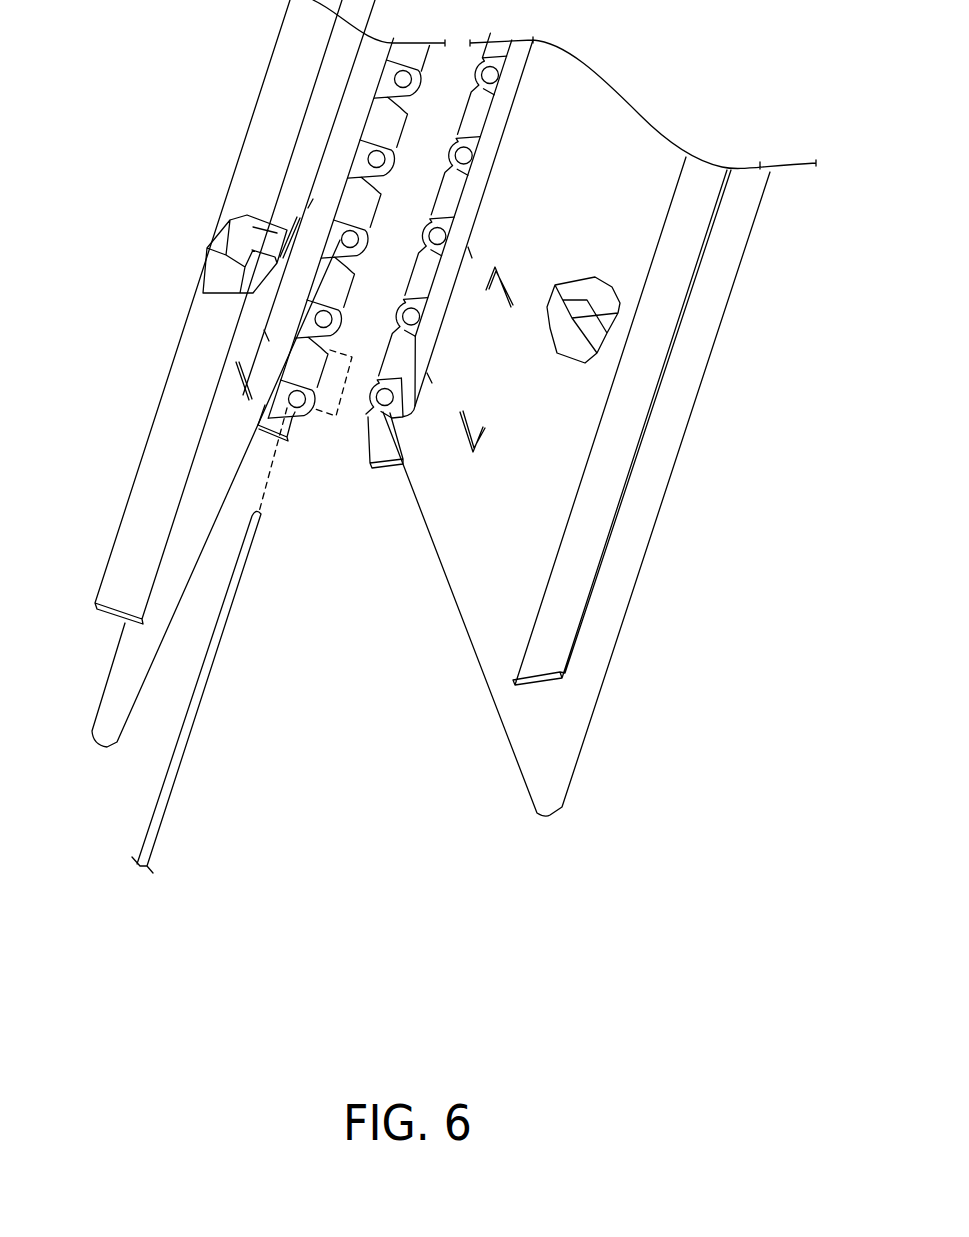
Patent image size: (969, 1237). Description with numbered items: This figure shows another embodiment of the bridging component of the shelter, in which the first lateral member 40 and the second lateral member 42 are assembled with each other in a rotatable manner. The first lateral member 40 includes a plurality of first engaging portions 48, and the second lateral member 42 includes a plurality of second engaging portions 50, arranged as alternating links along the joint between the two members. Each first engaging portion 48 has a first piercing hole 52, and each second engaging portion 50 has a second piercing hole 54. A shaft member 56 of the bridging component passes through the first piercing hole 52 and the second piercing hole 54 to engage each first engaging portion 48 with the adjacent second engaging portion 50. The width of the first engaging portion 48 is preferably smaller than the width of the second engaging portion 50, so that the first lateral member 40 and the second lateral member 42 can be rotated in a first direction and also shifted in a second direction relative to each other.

The first lateral member 40 is at (218, 447).
The second lateral member 42 is at (499, 523).
The first engaging portion 48 is at (352, 203).
The second engaging portion 50 is at (452, 198).
The first piercing hole 52 is at (307, 324).
The second piercing hole 54 is at (352, 485).
The shaft member 56 is at (208, 680).